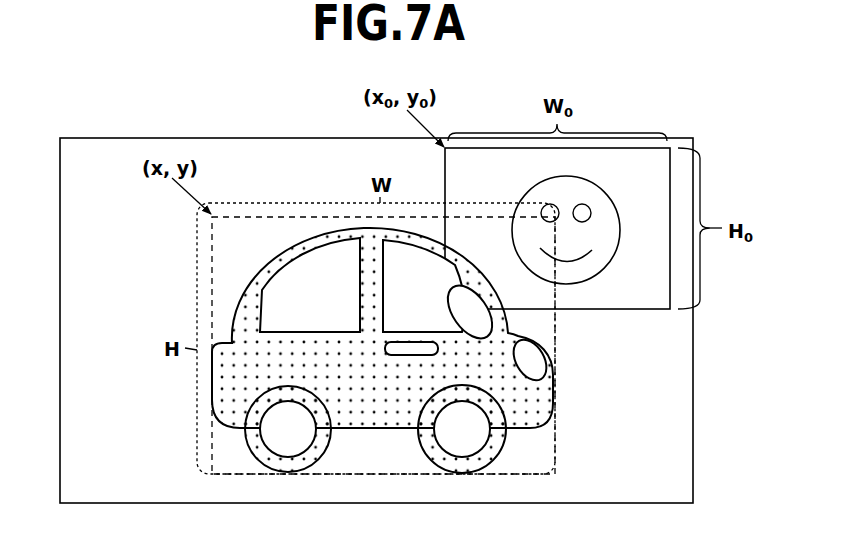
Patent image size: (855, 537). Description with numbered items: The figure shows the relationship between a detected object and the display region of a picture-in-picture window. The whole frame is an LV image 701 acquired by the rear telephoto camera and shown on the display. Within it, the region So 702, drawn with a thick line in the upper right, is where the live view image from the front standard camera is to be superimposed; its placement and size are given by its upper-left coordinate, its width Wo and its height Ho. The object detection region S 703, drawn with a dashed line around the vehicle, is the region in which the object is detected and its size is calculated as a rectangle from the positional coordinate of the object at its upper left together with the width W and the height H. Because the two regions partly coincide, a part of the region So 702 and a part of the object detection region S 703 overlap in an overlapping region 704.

The LV image 701 is at (254, 138).
The region So 702 is at (632, 148).
The object detection region S 703 is at (557, 441).
The overlapping region 704 is at (532, 298).